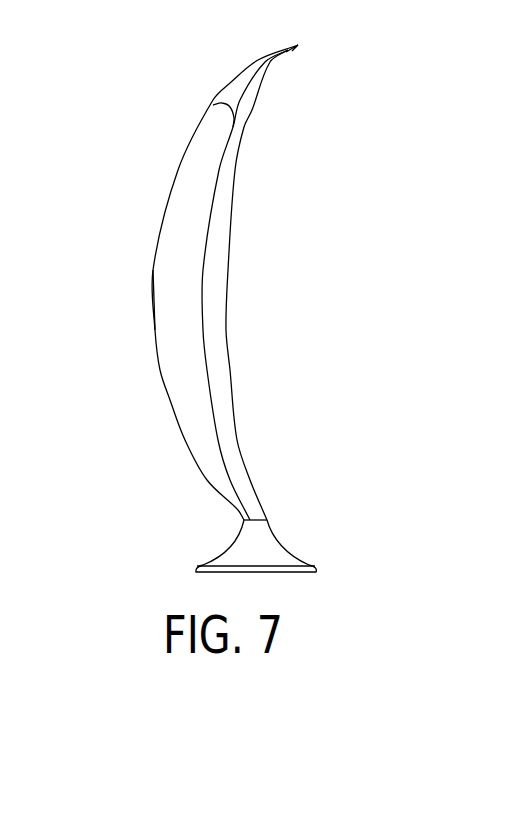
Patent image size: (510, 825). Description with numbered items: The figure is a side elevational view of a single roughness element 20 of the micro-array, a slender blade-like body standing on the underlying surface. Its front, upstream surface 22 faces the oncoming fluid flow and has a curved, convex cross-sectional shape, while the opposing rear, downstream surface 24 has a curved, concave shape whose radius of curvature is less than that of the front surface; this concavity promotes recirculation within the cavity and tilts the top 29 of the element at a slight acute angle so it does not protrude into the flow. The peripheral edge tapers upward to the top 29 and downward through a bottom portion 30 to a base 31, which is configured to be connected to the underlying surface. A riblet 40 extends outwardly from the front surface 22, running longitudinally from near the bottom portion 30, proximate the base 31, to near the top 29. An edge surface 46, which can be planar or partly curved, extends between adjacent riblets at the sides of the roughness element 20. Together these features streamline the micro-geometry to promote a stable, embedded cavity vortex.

The roughness element 20 is at (223, 292).
The front, upstream surface 22 is at (152, 266).
The rear, downstream surface 24 is at (240, 343).
The top 29 is at (313, 38).
The bottom portion 30 is at (280, 509).
The base 31 is at (218, 533).
The riblet 40 is at (130, 368).
The edge surface 46 is at (178, 184).